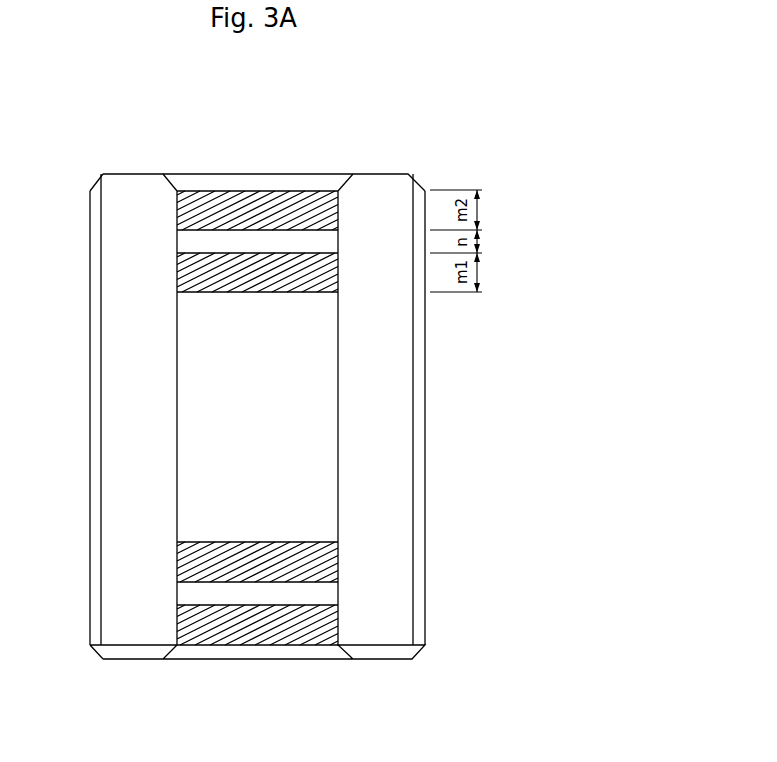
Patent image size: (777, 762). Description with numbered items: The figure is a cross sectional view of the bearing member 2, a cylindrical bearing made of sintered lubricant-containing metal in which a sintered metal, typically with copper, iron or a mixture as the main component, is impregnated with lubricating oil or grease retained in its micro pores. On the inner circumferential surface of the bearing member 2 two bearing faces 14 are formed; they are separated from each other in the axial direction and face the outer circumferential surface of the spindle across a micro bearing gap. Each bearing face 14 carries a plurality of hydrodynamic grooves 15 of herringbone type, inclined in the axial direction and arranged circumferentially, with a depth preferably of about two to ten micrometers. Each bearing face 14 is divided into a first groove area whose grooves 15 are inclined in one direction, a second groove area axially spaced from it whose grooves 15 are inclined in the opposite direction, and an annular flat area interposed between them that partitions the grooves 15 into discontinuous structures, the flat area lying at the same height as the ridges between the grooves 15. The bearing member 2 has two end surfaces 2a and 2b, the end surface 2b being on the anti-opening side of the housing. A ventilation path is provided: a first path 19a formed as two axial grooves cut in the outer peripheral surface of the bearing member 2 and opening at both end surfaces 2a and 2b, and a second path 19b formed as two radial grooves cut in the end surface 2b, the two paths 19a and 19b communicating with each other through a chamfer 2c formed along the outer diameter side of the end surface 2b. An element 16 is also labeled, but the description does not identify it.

The bearing member 2 is at (130, 470).
The end surface 2a is at (128, 173).
The end surface 2b is at (137, 661).
The chamfer 2c is at (97, 651).
The bearing face 14 is at (337, 242).
The hydrodynamic groove 15 is at (272, 192).
The internal electrode layer 16 is at (300, 191).
The first path 19a is at (425, 397).
The second path 19b is at (388, 661).